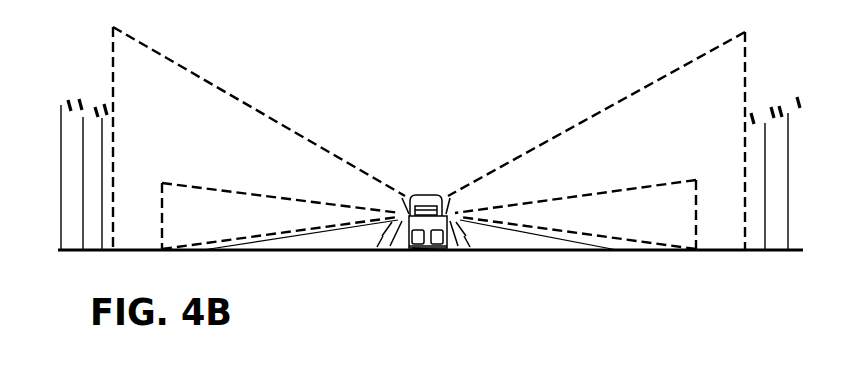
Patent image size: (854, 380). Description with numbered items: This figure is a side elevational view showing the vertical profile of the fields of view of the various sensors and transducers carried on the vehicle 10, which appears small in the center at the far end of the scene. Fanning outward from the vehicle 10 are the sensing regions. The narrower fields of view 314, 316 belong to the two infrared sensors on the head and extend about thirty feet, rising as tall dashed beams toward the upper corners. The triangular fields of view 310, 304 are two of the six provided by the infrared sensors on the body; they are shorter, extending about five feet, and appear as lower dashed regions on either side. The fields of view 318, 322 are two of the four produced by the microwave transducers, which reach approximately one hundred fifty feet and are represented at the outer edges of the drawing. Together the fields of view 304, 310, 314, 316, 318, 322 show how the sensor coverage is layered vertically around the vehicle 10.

The vehicle 10 is at (423, 197).
The triangular field of view 304 is at (575, 197).
The triangular field of view 310 is at (281, 196).
The field of view 314 is at (289, 128).
The field of view 316 is at (569, 126).
The field of view 318 is at (85, 146).
The field of view 322 is at (775, 148).